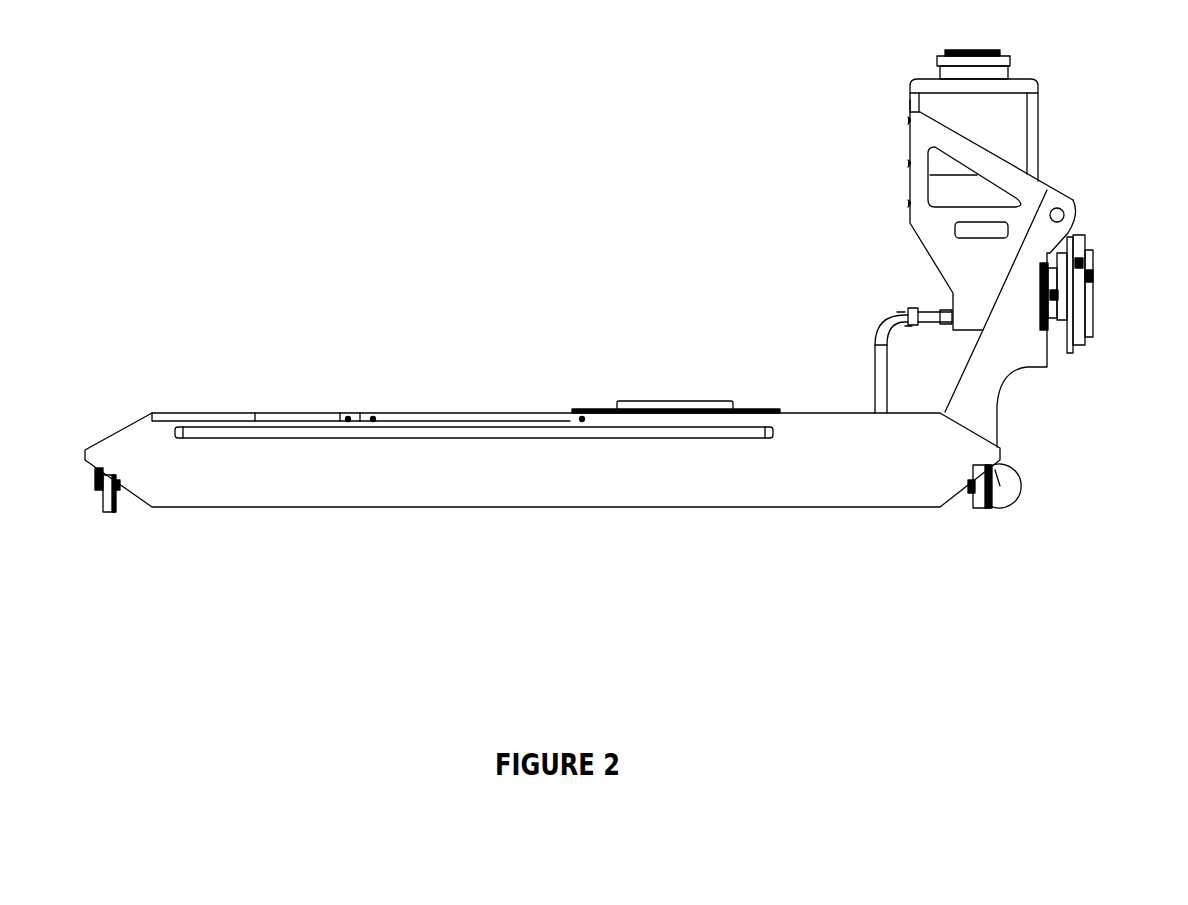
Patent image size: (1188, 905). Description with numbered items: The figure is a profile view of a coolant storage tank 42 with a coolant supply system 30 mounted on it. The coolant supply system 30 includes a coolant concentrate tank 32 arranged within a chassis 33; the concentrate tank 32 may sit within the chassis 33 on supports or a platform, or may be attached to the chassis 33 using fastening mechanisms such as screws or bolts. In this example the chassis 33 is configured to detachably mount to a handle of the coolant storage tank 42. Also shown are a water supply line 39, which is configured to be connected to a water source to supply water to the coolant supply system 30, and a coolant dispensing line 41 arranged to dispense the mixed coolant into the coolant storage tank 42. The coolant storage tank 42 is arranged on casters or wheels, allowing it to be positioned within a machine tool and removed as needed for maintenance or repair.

The coolant supply system 30 is at (1121, 142).
The coolant concentrate tank 32 is at (910, 102).
The chassis 33 is at (920, 232).
The water supply line 39 is at (1095, 300).
The coolant dispensing line 41 is at (882, 323).
The coolant storage tank 42 is at (170, 497).